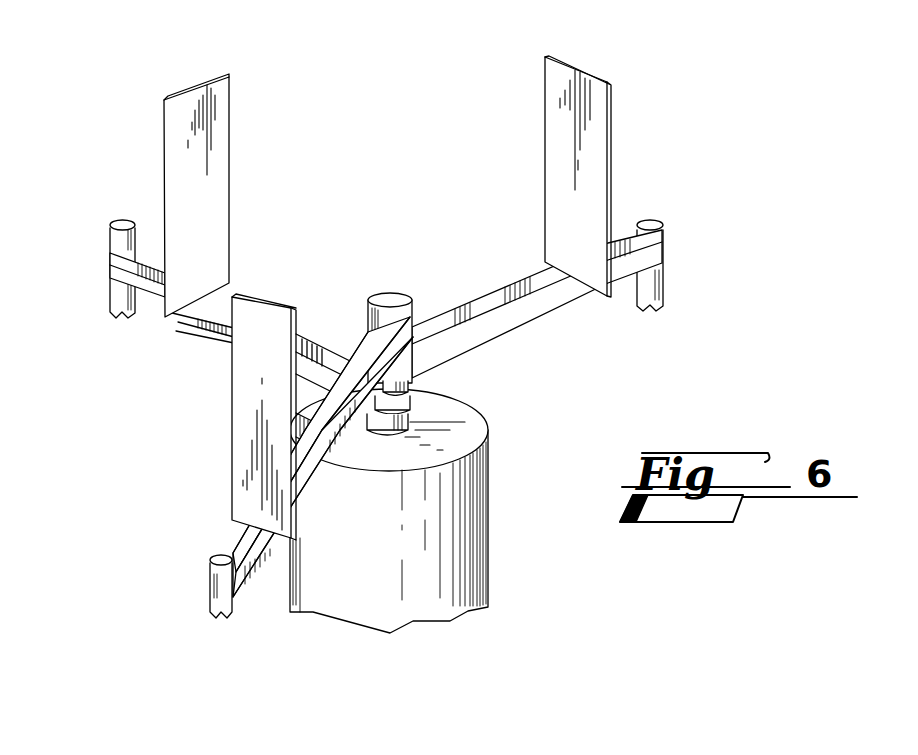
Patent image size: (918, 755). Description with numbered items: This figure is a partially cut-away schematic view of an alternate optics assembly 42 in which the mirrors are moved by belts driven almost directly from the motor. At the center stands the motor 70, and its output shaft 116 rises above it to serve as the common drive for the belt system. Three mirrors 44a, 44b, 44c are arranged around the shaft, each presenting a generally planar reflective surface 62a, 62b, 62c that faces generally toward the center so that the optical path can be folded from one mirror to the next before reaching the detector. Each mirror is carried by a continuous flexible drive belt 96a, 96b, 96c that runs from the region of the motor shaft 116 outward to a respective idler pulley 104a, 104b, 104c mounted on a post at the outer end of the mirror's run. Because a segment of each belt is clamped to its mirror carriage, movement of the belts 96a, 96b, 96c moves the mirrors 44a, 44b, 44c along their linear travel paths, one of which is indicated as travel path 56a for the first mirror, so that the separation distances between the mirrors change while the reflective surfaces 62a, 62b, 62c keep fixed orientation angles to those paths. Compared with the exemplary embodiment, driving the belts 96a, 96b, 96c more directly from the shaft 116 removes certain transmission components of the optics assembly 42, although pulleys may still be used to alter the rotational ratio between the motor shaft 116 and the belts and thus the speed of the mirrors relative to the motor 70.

The optics assembly 42 is at (213, 8).
The mirror 44a is at (246, 114).
The mirror 44b is at (232, 417).
The mirror 44c is at (608, 140).
The reflective surface 62a is at (214, 229).
The reflective surface 62b is at (275, 367).
The reflective surface 62c is at (588, 230).
The drive belt 96a is at (155, 252).
The drive belt 96b is at (233, 527).
The drive belt 96c is at (470, 305).
The idler pulley 104a is at (112, 238).
The idler pulley 104b is at (210, 622).
The idler pulley 104c is at (642, 220).
The motor output shaft 116 is at (393, 296).
The motor 70 is at (405, 582).
The travel path 56a is at (686, 738).